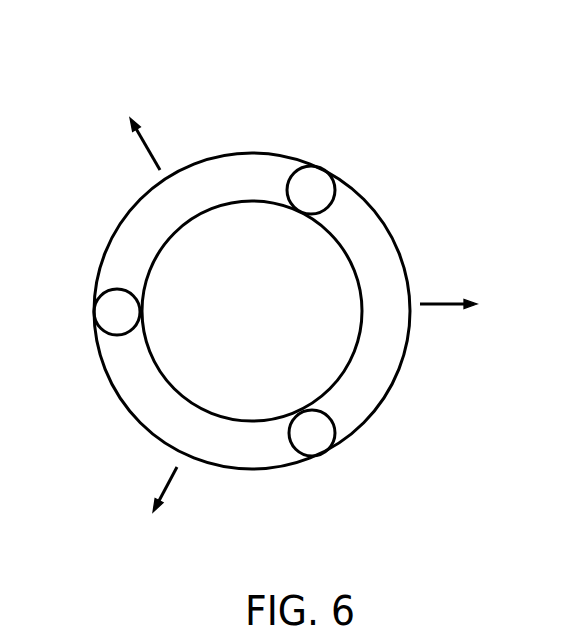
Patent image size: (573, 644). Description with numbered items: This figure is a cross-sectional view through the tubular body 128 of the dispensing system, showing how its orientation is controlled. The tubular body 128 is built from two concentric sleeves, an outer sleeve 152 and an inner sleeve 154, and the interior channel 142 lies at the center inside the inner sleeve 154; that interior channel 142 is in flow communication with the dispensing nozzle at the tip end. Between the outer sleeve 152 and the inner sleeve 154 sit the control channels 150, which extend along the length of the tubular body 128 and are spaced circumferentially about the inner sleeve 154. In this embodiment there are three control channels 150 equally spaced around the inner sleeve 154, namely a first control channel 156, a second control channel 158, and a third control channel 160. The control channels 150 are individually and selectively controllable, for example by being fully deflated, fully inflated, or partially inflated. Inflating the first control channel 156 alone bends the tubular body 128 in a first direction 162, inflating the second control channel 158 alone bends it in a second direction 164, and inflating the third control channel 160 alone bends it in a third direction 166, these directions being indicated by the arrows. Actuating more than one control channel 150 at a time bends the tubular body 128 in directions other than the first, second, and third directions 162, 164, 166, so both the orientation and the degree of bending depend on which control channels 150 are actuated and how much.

The tubular body 128 is at (269, 241).
The interior channel 142 is at (275, 316).
The control channels 150 is at (269, 283).
The outer sleeve 152 is at (377, 212).
The inner sleeve 154 is at (358, 265).
The first control channel 156 is at (335, 200).
The second control channel 158 is at (333, 422).
The third control channel 160 is at (117, 335).
The first direction 162 is at (176, 478).
The second direction 164 is at (151, 138).
The third direction 166 is at (445, 308).